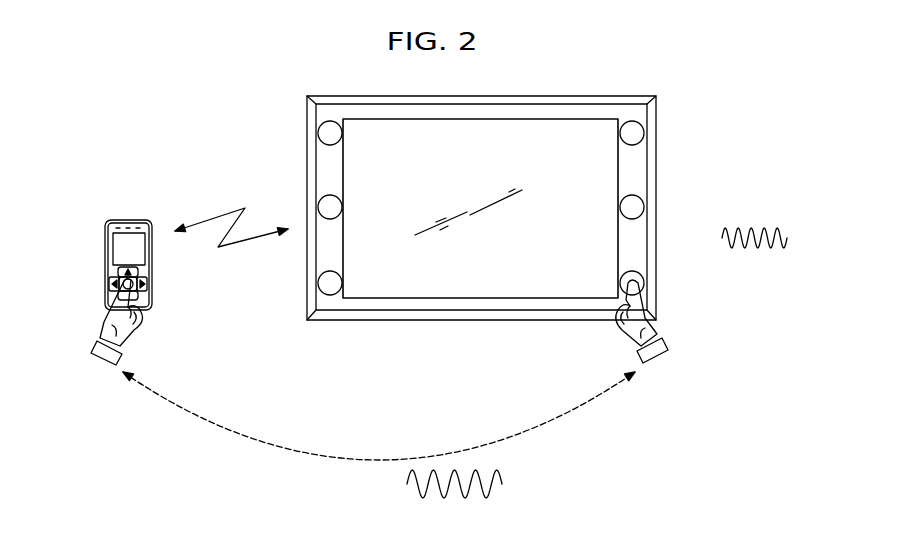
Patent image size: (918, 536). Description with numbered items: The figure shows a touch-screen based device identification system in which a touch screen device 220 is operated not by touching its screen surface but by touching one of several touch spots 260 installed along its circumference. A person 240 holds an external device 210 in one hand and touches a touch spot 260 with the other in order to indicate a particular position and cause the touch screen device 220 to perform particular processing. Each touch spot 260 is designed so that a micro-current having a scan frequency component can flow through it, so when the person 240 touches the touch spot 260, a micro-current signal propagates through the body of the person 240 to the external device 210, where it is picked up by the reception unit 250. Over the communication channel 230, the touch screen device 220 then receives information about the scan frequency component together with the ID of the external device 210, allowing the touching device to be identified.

The external device 210 is at (132, 242).
The touch screen device 220 is at (481, 208).
The communication channel 230 is at (243, 240).
The person 240 is at (202, 422).
The reception unit 250 is at (138, 290).
The touch spot 260 is at (645, 210).